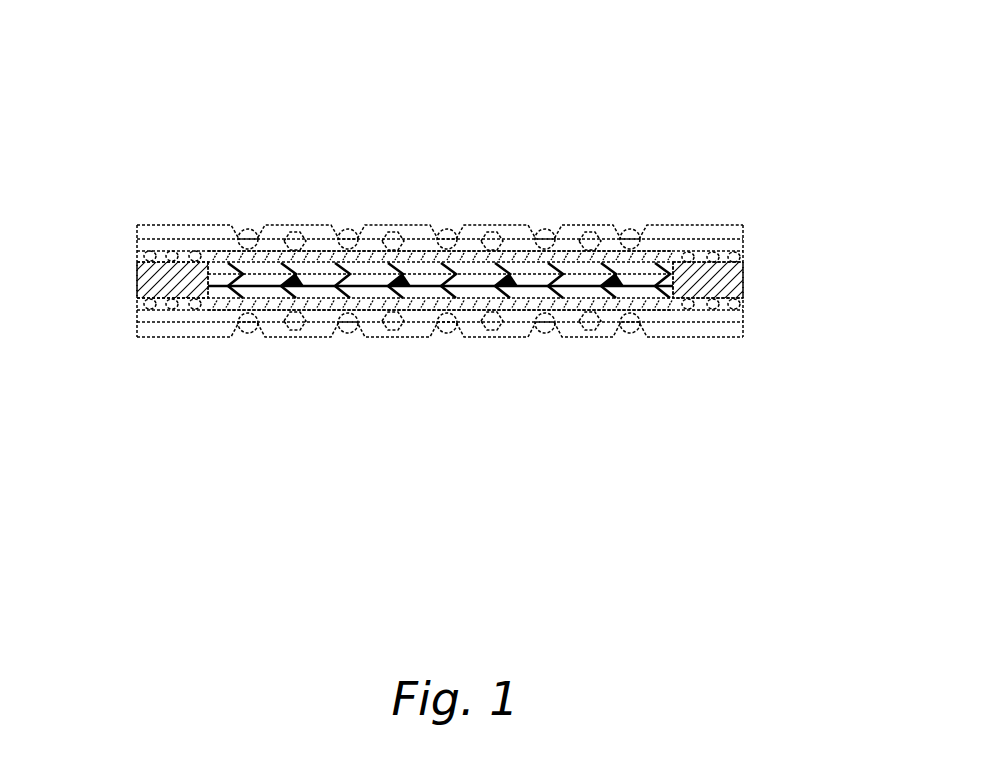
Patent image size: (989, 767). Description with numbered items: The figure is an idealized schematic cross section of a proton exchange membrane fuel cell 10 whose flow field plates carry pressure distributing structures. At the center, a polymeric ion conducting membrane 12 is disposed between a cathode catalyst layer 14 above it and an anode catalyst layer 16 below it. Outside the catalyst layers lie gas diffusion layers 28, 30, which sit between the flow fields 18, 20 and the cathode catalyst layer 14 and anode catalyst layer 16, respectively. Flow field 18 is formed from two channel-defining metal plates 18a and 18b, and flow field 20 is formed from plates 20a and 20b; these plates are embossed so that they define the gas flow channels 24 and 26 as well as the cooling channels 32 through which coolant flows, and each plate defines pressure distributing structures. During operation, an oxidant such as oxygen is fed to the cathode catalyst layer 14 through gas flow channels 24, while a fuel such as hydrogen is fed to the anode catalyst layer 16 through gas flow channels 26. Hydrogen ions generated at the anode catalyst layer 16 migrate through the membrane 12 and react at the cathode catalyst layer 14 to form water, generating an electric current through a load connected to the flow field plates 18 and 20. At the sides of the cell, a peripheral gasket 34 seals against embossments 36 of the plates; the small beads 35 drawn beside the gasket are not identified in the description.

The proton exchange membrane fuel cell 10 is at (132, 92).
The polymeric ion conducting membrane 12 is at (214, 280).
The cathode catalyst layer 14 is at (268, 272).
The anode catalyst layer 16 is at (592, 302).
The flow field 18 is at (752, 225).
The channel-defining plate 18a is at (137, 229).
The channel-defining plate 18b is at (137, 245).
The flow field 20 is at (752, 310).
The channel-defining plate 20a is at (137, 330).
The channel-defining plate 20b is at (137, 316).
The gas flow channels 24 is at (340, 225).
The gas flow channels 26 is at (350, 228).
The gas diffusion layer 28 is at (635, 250).
The gas diffusion layer 30 is at (643, 300).
The cooling channels 32 is at (393, 234).
The peripheral gasket 34 is at (137, 278).
The left spacer bead 35 is at (170, 250).
The embossments 36 is at (690, 254).